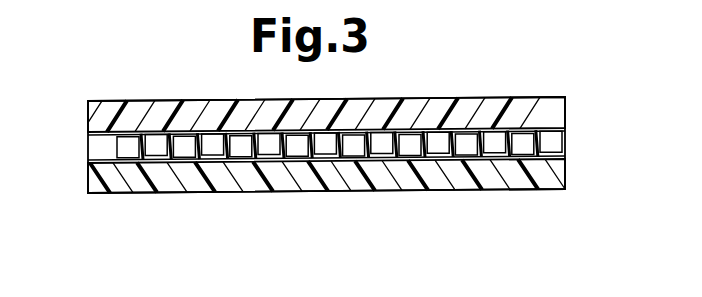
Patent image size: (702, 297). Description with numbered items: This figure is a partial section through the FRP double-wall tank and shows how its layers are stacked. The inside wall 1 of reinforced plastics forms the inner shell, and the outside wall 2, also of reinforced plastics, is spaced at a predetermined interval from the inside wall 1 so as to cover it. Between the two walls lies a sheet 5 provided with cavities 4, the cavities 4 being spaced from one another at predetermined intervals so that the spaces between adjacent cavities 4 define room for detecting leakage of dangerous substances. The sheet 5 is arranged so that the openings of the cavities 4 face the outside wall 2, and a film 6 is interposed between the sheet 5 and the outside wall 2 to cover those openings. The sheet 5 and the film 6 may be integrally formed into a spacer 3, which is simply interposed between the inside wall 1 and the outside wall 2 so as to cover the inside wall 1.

The inside wall 1 is at (147, 182).
The outside wall 2 is at (138, 113).
The spacer 3 is at (78, 154).
The cavities 4 is at (518, 137).
The sheet 5 is at (537, 154).
The film 6 is at (480, 120).